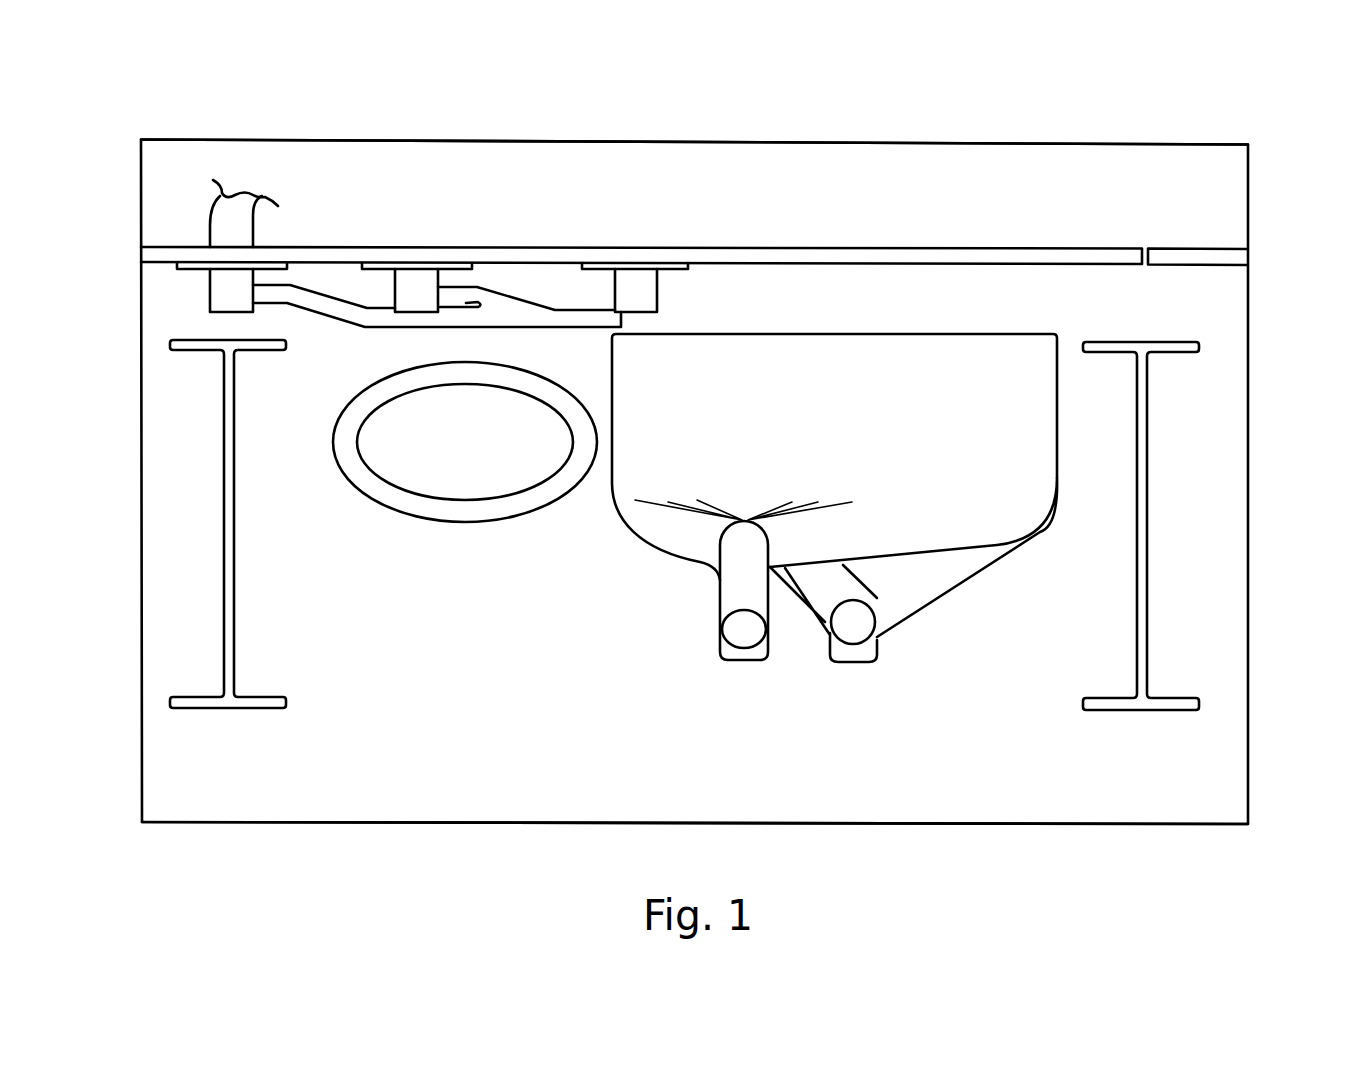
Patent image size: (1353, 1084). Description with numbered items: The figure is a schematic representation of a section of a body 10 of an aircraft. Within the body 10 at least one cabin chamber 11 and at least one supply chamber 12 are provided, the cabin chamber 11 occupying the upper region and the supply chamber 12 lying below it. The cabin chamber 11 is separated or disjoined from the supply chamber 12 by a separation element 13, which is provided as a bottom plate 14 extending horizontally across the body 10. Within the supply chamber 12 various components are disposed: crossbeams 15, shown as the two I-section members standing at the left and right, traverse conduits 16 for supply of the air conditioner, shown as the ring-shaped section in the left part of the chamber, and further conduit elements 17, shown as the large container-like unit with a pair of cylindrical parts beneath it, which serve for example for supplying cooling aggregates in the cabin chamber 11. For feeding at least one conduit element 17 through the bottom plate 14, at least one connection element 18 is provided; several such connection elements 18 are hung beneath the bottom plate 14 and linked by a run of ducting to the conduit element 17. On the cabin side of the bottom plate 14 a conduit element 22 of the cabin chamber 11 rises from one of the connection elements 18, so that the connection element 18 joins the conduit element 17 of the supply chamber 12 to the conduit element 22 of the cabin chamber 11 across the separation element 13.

The body 10 is at (1275, 418).
The cabin chamber 11 is at (648, 203).
The supply chamber 12 is at (538, 623).
The separation element 13 is at (694, 176).
The bottom plate 14 is at (953, 263).
The crossbeams 15 is at (227, 533).
The traverse conduits 16 is at (427, 505).
The conduit element 17 is at (786, 370).
The connection element 18 is at (391, 292).
The conduit element 22 is at (218, 225).